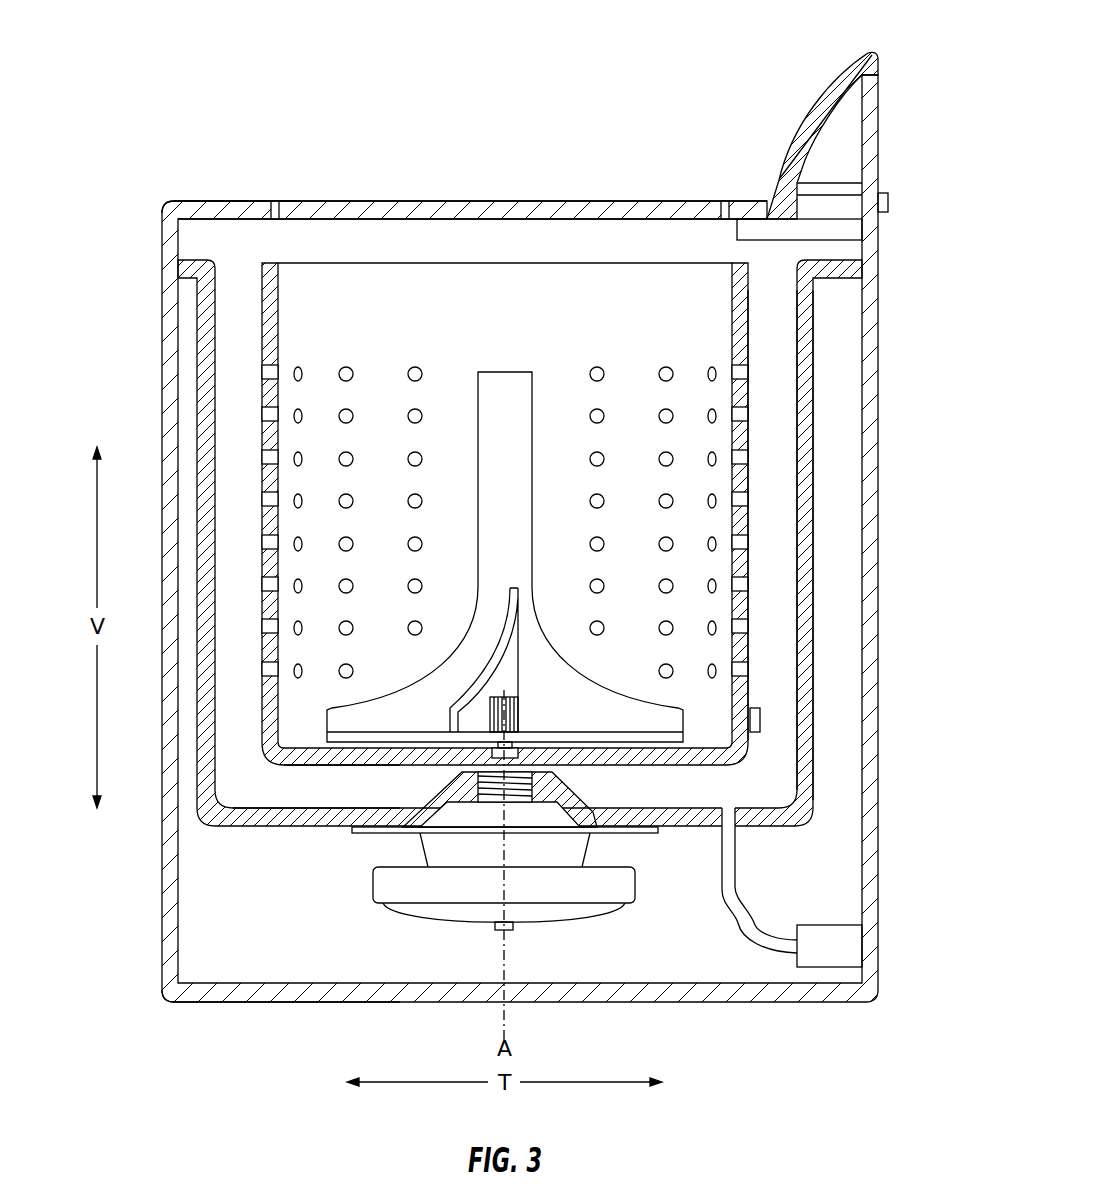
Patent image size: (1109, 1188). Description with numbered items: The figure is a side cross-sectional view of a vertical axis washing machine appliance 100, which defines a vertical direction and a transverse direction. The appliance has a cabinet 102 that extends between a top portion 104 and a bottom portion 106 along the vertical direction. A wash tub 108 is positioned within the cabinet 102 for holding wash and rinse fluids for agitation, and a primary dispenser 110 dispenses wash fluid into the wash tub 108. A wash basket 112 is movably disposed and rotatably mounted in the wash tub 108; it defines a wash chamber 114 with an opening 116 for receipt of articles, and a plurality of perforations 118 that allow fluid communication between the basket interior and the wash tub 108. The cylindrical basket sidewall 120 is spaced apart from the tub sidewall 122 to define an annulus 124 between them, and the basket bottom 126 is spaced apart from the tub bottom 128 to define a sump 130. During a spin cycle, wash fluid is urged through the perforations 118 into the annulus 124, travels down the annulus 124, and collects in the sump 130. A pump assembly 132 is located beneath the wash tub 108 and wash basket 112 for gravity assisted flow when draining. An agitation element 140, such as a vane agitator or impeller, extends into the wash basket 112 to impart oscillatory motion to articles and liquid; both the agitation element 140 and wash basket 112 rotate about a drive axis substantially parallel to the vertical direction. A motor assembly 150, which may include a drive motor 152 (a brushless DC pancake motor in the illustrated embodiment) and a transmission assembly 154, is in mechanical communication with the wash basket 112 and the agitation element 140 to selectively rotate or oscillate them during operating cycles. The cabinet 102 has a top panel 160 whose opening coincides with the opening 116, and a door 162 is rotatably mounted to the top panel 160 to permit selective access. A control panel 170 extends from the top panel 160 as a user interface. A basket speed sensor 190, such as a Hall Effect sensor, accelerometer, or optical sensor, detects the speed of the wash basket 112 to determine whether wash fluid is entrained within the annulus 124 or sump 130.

The washing machine appliance 100 is at (197, 80).
The cabinet 102 is at (165, 345).
The top portion 104 is at (143, 212).
The bottom portion 106 is at (152, 1000).
The wash tub 108 is at (800, 672).
The primary dispenser 110 is at (757, 232).
The wash basket 112 is at (260, 290).
The wash chamber 114 is at (340, 314).
The opening 116 is at (591, 252).
The perforations 118 is at (430, 364).
The basket sidewall 120 is at (760, 392).
The tub sidewall 122 is at (824, 472).
The annulus 124 is at (782, 552).
The basket bottom 126 is at (293, 776).
The tub bottom 128 is at (760, 845).
The sump 130 is at (323, 810).
The pump assembly 132 is at (768, 965).
The agitation element 140 is at (515, 372).
The motor assembly 150 is at (332, 876).
The drive motor 152 is at (628, 888).
The transmission assembly 154 is at (570, 836).
The top panel 160 is at (207, 200).
The door 162 is at (392, 201).
The control panel 170 is at (812, 97).
The basket speed sensor 190 is at (760, 720).